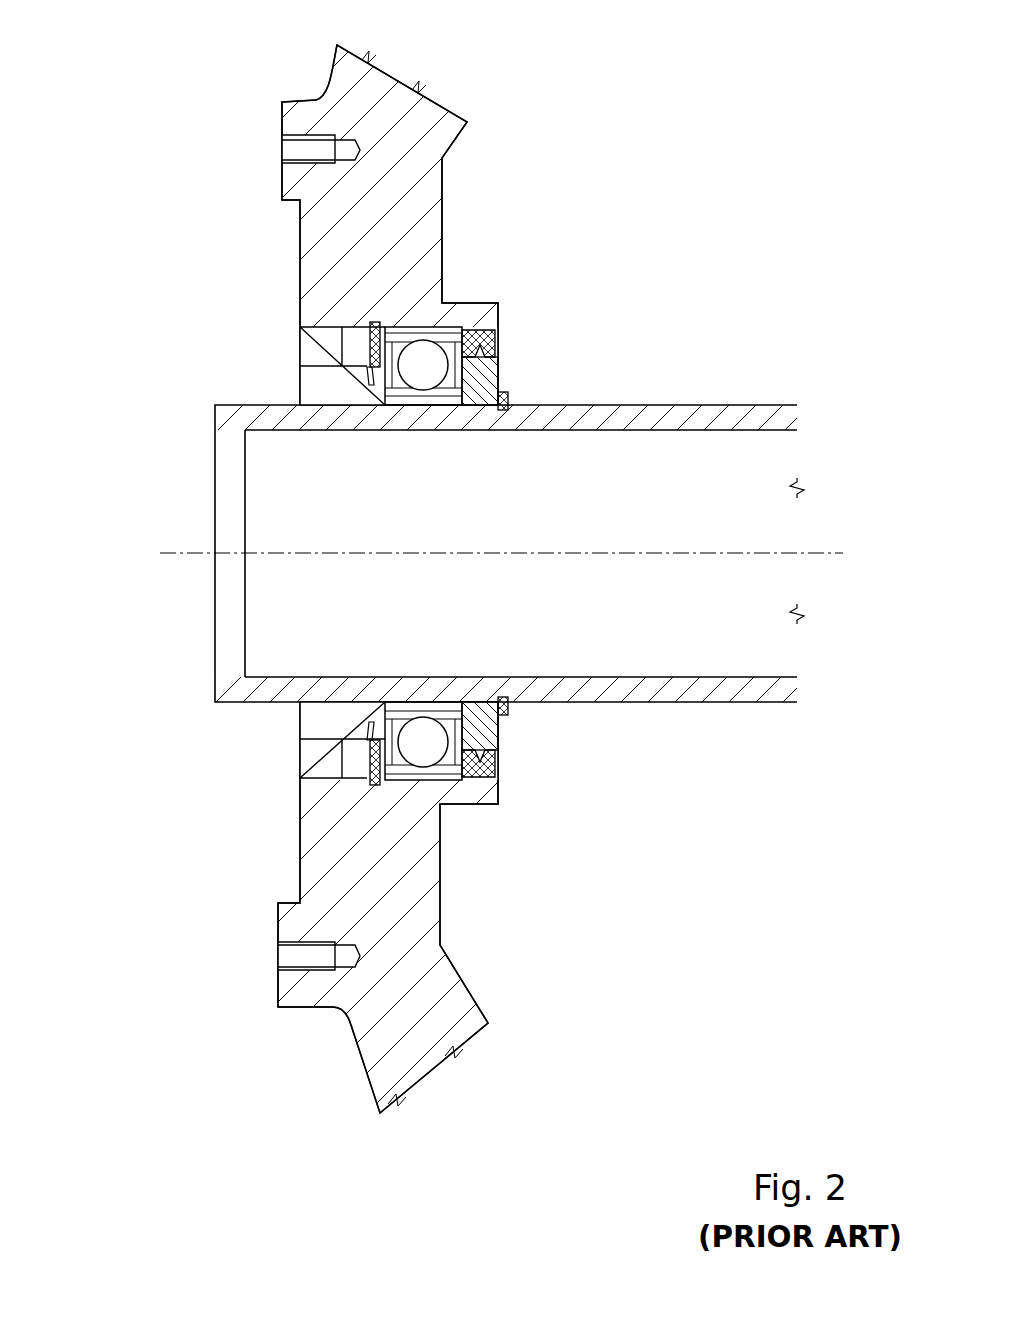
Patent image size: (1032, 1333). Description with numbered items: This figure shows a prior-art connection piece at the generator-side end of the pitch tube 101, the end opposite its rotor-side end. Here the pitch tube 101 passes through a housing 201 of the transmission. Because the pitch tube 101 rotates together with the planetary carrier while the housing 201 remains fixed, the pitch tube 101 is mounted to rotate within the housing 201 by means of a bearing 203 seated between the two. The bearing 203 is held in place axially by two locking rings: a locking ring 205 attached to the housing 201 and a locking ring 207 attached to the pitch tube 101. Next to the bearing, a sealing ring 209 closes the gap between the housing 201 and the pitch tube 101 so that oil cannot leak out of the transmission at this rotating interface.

The pitch tube 101 is at (600, 403).
The housing 201 is at (403, 1030).
The bearing 203 is at (443, 312).
The locking ring 205 is at (377, 330).
The locking ring 207 is at (507, 703).
The sealing ring 209 is at (492, 800).